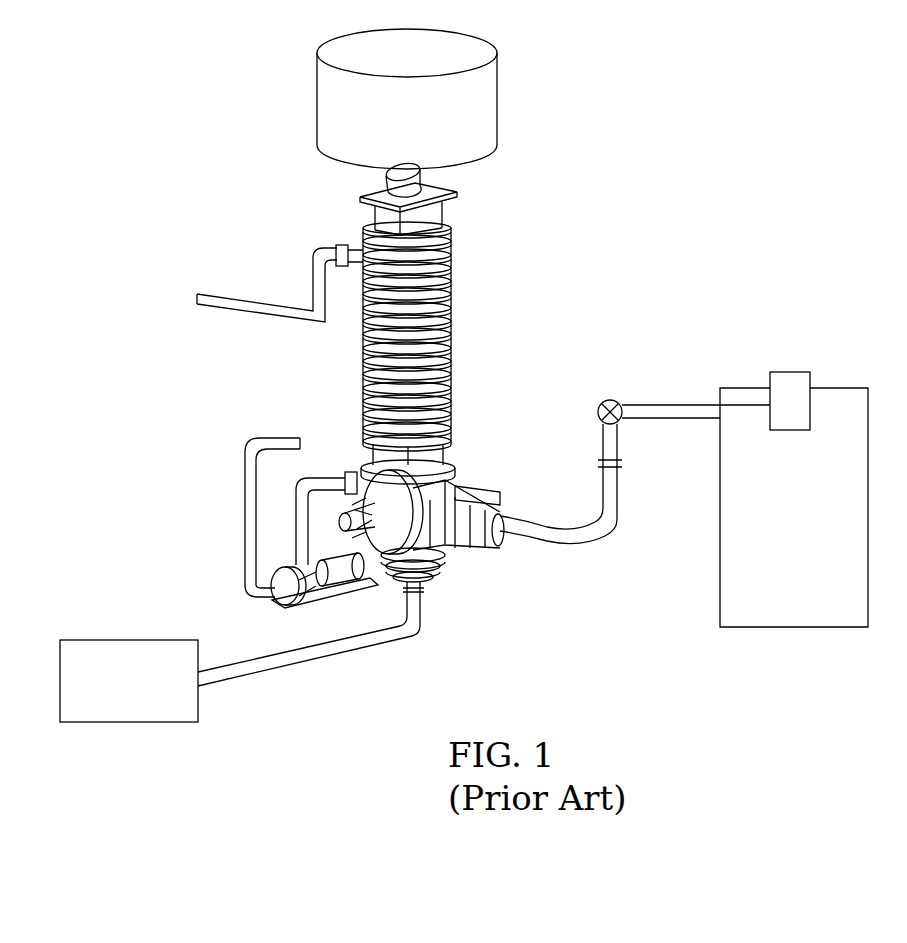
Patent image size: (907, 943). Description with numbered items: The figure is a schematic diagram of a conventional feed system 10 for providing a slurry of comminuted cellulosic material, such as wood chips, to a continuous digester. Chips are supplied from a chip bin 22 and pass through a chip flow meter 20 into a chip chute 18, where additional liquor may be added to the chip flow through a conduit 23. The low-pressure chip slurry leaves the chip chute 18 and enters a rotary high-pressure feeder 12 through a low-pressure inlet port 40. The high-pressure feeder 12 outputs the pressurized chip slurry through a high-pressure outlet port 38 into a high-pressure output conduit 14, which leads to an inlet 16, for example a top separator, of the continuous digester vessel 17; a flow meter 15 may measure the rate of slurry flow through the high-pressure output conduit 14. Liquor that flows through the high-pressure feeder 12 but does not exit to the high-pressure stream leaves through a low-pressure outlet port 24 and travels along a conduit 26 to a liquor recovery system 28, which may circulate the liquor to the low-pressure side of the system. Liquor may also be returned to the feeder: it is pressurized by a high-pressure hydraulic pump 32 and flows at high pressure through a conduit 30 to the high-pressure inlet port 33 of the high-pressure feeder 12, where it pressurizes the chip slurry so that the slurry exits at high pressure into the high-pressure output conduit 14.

The feed system 10 is at (124, 198).
The high-pressure feeder 12 is at (449, 461).
The high-pressure output conduit 14 is at (590, 541).
The flow meter 15 is at (610, 397).
The inlet 16 is at (789, 379).
The continuous digester vessel 17 is at (784, 549).
The chip chute 18 is at (360, 351).
The chip flow meter 20 is at (421, 170).
The chip bin 22 is at (392, 138).
The conduit 23 is at (264, 304).
The low-pressure outlet port 24 is at (440, 568).
The conduit 26 is at (318, 656).
The liquor recovery system 28 is at (133, 639).
The conduit 30 is at (297, 535).
The high-pressure hydraulic pump 32 is at (280, 593).
The high-pressure inlet port 33 is at (365, 481).
The high-pressure outlet port 38 is at (453, 497).
The low-pressure inlet port 40 is at (365, 476).